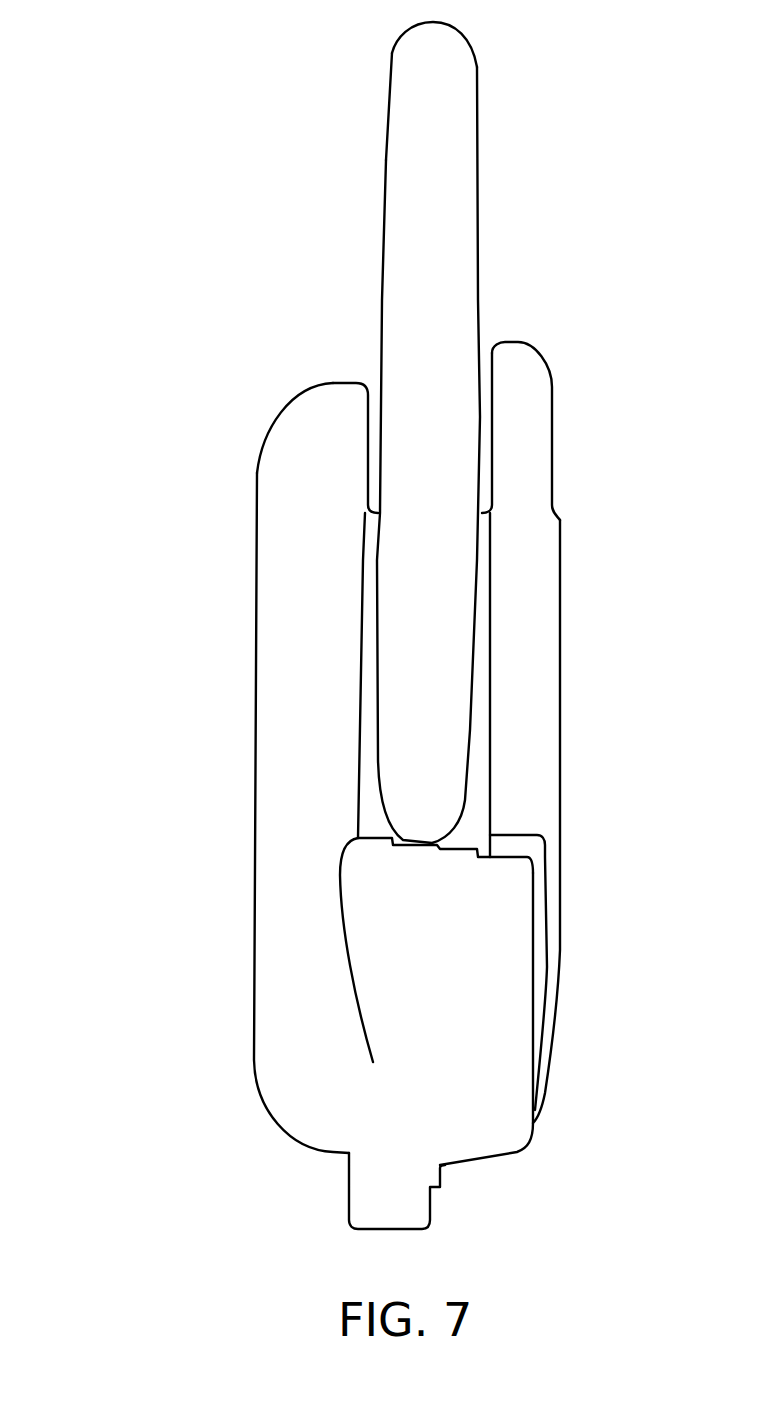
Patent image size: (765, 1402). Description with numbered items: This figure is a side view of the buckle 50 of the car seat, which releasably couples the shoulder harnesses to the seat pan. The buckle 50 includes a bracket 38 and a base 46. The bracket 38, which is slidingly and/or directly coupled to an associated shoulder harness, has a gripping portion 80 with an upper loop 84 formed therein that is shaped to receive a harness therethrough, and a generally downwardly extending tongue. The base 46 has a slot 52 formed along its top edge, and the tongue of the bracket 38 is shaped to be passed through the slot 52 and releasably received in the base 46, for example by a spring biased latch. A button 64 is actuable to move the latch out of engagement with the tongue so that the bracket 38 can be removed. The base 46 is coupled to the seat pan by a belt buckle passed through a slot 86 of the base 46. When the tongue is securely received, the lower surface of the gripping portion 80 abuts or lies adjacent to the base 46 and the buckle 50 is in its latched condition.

The bracket 38 is at (467, 280).
The base 46 is at (293, 1013).
The buckle 50 is at (198, 487).
The slot 52 is at (367, 375).
The button 64 is at (240, 747).
The gripping portion 80 is at (467, 125).
The upper loop 84 is at (340, 127).
The slot 86 is at (320, 1192).